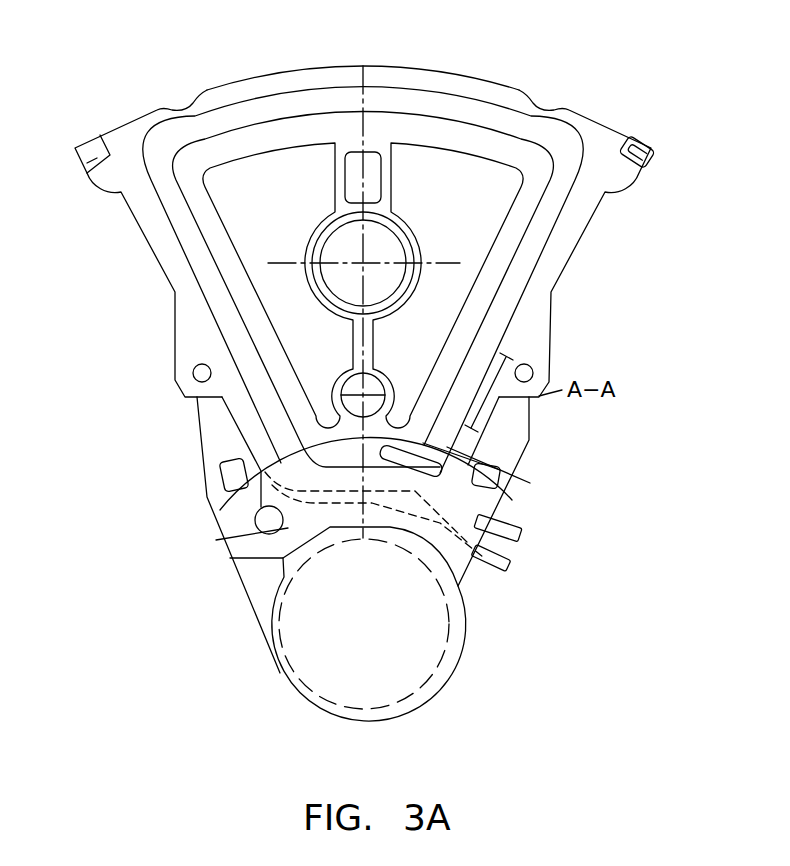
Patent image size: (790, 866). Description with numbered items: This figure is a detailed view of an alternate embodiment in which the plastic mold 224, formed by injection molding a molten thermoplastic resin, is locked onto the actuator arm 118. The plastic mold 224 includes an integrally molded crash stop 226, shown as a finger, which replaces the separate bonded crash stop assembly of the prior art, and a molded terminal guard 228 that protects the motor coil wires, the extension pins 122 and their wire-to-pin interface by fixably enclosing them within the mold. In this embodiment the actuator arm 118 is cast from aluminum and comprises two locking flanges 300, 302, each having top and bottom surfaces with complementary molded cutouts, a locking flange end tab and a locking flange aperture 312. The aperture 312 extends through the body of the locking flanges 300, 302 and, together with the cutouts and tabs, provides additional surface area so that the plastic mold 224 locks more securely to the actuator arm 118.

The plastic mold 224 is at (148, 115).
The molded crash stop 226 is at (118, 137).
The actuator arm 118 is at (213, 537).
The locking flange 300 is at (218, 442).
The locking flange 302 is at (510, 443).
The locking flange aperture 312 is at (237, 478).
The extension pins 122 is at (518, 538).
The molded terminal guard 228 is at (505, 562).